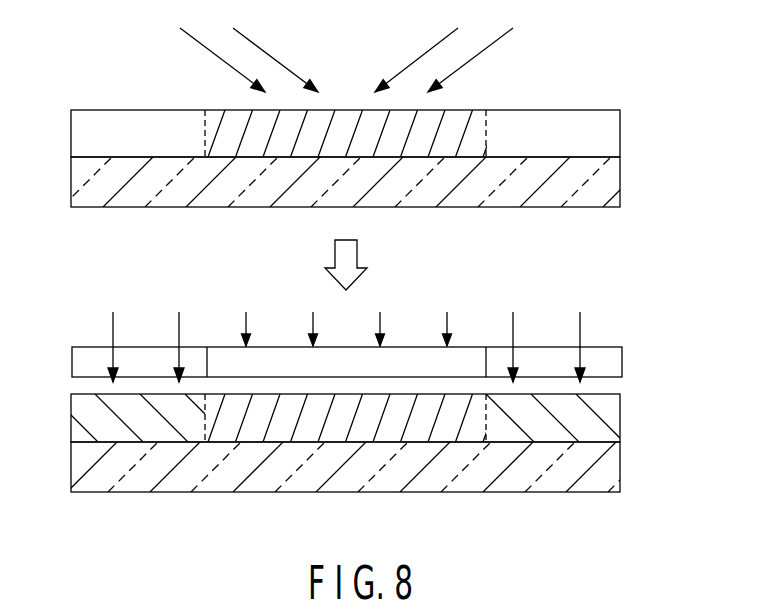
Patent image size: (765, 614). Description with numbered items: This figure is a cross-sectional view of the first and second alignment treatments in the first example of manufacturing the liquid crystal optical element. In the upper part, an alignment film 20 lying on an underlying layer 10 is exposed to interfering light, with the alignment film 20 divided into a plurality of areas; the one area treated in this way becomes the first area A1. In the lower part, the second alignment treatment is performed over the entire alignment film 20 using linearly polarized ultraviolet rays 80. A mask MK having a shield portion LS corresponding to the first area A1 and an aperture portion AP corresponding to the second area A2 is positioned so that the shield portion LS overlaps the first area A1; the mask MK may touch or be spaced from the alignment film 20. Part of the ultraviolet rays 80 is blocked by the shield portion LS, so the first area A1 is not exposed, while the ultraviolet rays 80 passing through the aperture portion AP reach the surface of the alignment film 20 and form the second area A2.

The substrate 10 is at (622, 178).
The alignment film 20 is at (622, 128).
The ultraviolet rays 80 is at (179, 321).
The first area A1 is at (430, 146).
The second area A2 is at (142, 427).
The aperture portion AP is at (89, 348).
The shield portion LS is at (473, 357).
The mask MK is at (624, 358).